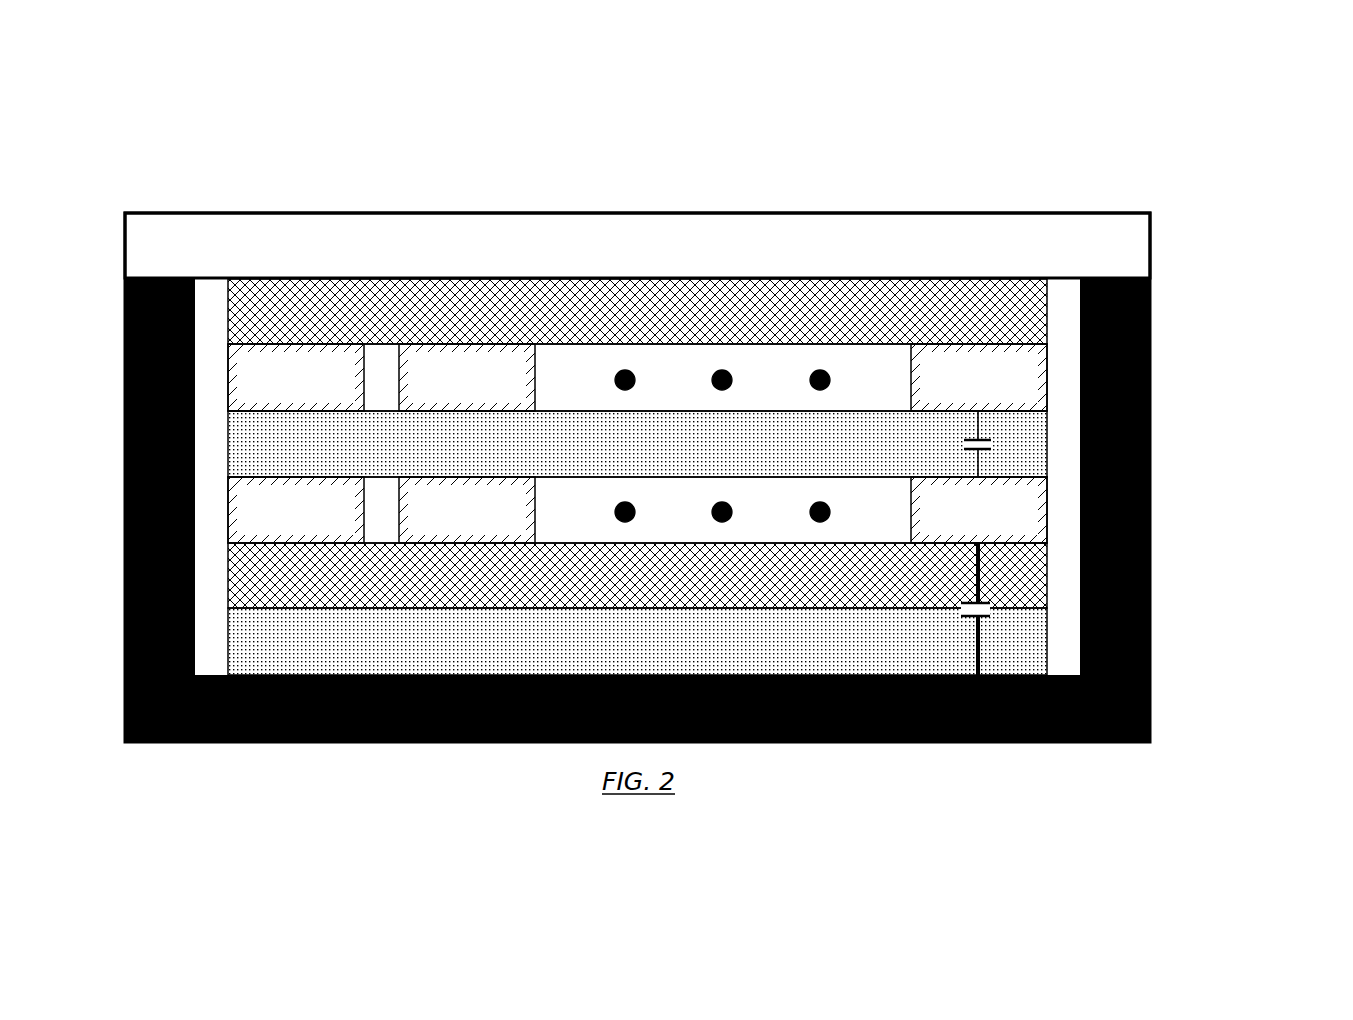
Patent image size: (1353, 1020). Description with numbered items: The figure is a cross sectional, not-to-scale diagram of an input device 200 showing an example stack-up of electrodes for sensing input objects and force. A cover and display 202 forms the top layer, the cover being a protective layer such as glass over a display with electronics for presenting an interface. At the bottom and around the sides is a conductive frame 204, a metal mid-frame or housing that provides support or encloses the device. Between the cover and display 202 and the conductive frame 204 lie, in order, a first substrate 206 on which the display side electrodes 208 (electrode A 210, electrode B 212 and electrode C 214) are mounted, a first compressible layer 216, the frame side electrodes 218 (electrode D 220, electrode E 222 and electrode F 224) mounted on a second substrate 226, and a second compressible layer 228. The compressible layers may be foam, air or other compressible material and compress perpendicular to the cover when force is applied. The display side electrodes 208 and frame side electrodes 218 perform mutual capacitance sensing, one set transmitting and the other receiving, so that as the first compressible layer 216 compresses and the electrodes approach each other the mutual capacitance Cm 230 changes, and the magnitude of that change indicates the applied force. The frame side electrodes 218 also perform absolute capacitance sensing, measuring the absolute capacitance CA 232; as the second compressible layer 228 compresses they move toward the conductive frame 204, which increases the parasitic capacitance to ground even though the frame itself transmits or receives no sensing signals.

The input device 200 is at (936, 85).
The cover and display 202 is at (556, 257).
The conductive frame 204 is at (556, 719).
The first substrate 206 is at (576, 322).
The display side electrodes 208 is at (1165, 345).
The electrode A 210 is at (279, 376).
The electrode B 212 is at (450, 376).
The electrode C 214 is at (962, 376).
The first compressible layer 216 is at (524, 456).
The frame side electrodes 218 is at (1165, 472).
The electrode D 220 is at (279, 507).
The electrode E 222 is at (450, 507).
The electrode F 224 is at (962, 507).
The second substrate 226 is at (561, 587).
The second compressible layer 228 is at (508, 656).
The mutual capacitance Cm 230 is at (891, 456).
The absolute capacitance CA 232 is at (892, 621).